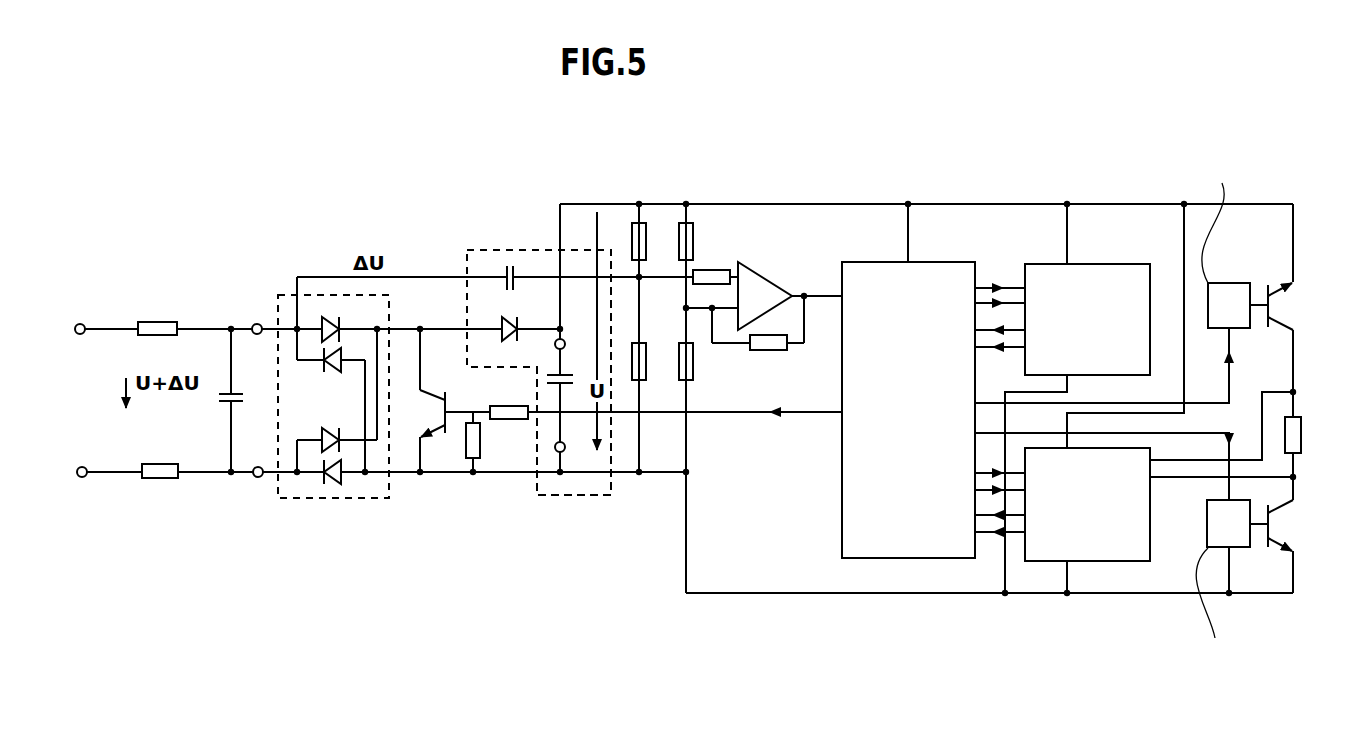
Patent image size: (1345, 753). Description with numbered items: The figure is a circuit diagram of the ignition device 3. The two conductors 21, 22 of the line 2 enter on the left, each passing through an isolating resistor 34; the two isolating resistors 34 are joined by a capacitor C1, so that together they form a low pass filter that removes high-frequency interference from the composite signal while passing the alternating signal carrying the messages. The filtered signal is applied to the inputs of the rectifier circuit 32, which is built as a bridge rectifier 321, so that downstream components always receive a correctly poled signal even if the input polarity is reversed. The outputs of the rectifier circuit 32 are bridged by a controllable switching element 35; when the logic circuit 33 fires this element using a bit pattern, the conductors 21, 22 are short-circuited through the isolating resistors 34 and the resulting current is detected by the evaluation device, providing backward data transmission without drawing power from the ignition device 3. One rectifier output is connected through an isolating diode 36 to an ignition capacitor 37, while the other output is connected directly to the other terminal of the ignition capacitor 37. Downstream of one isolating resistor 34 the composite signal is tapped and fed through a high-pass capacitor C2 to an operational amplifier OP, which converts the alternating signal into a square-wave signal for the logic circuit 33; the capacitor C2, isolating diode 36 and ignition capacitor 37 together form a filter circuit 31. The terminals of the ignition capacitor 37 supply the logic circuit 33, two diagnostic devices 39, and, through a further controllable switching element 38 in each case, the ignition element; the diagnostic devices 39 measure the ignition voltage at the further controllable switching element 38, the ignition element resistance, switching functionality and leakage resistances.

The line 2 is at (114, 538).
The conductor 21 is at (100, 325).
The conductor 22 is at (92, 478).
The isolating resistor 34 is at (155, 322).
The capacitor C1 is at (245, 400).
The capacitor C2 is at (505, 266).
The rectifier circuit 32 is at (285, 500).
The bridge rectifier 321 is at (336, 507).
The controllable switching element 35 is at (445, 412).
The isolating diode 36 is at (510, 320).
The ignition capacitor 37 is at (573, 372).
The ignition device 3 is at (548, 530).
The filter circuit 31 is at (598, 497).
The operational amplifier OP is at (764, 270).
The logic circuit 33 is at (841, 490).
The diagnostic device 39 is at (1030, 264).
The further controllable switching element 38 is at (1260, 281).